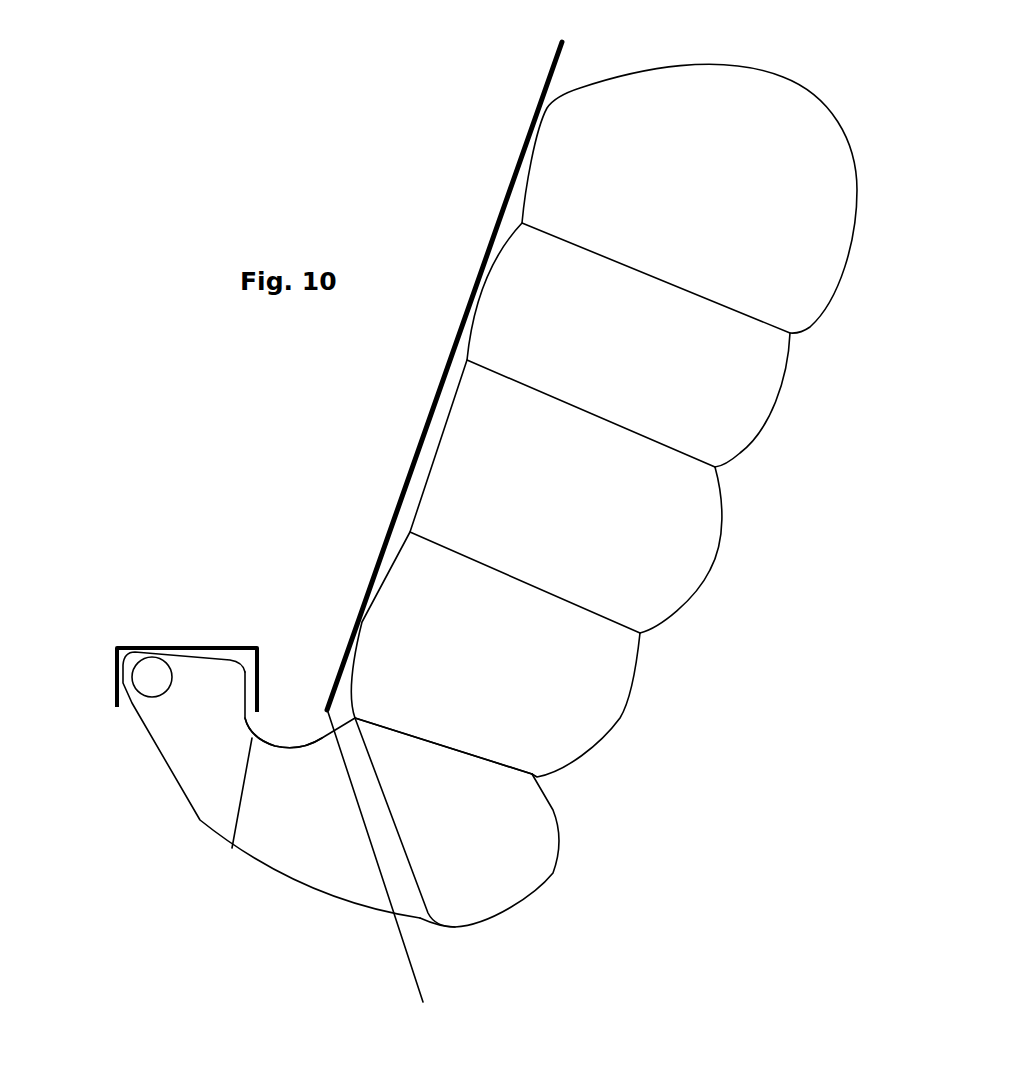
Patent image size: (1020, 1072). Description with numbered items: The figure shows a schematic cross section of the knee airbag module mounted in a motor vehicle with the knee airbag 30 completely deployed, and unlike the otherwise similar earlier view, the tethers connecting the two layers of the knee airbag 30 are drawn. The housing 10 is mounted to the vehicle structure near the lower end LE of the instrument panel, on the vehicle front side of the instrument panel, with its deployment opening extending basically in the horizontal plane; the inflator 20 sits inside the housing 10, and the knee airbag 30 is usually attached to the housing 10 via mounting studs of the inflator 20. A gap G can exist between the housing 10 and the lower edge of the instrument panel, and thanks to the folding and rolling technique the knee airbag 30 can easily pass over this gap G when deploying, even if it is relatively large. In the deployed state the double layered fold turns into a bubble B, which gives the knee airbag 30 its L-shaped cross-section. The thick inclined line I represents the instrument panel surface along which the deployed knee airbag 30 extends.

The housing 10 is at (205, 648).
The inflator 20 is at (150, 673).
The knee airbag 30 is at (715, 417).
The gap G is at (288, 708).
The instrument bar I is at (412, 470).
The bubble B is at (500, 850).
The lower end of the instrument panel LE is at (386, 874).